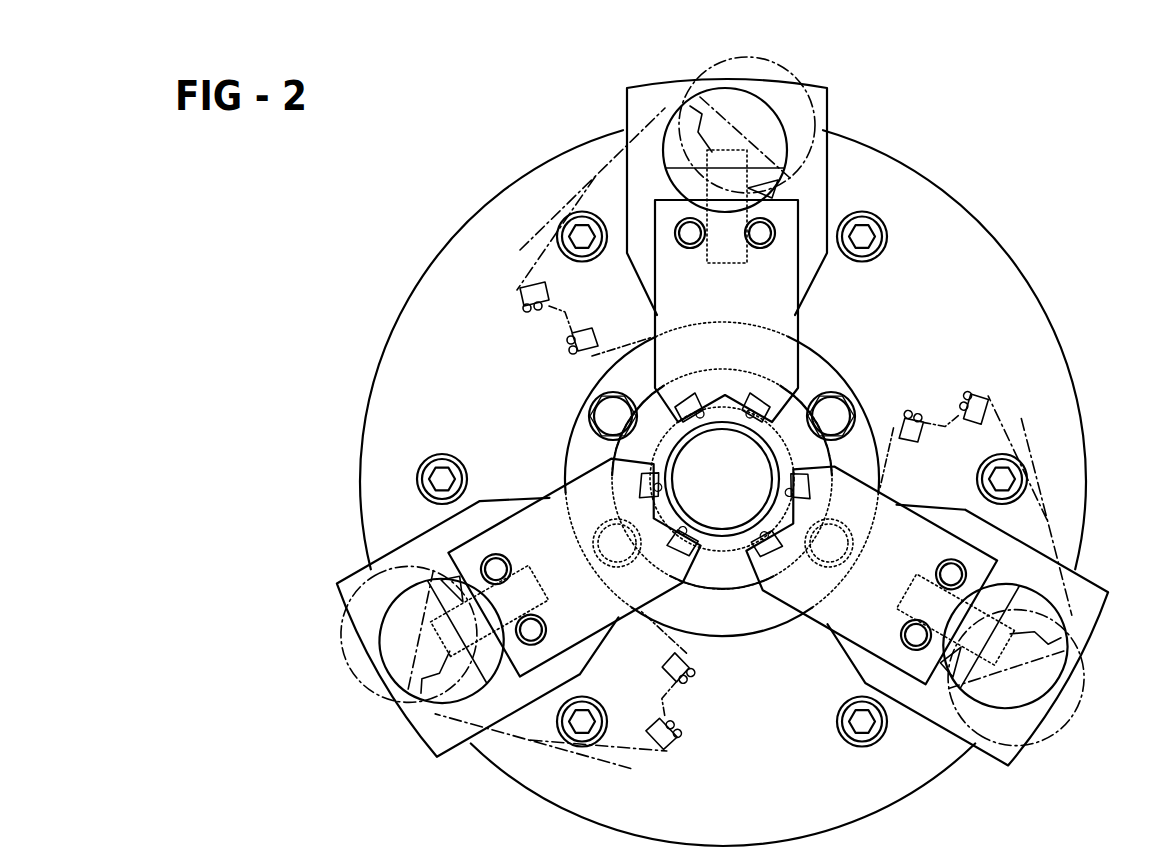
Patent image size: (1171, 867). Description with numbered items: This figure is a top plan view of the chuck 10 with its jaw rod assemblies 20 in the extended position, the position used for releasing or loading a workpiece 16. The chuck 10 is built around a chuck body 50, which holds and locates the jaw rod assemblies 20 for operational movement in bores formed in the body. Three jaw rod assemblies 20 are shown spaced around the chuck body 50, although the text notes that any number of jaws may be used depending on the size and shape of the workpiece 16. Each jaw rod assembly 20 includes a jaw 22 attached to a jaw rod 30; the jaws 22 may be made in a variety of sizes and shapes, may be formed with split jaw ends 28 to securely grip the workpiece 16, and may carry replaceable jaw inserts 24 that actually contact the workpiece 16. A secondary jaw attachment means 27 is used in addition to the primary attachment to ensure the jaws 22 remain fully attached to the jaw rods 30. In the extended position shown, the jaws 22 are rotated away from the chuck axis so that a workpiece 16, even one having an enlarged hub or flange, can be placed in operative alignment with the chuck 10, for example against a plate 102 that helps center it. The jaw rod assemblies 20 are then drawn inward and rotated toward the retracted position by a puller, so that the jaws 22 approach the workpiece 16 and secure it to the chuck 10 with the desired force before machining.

The chuck 10 is at (1022, 186).
The workpiece 16 is at (724, 540).
The jaw rod assembly 20 is at (549, 530).
The jaw 22 is at (772, 352).
The jaw insert 24 is at (673, 738).
The secondary jaw attachment means 27 is at (766, 234).
The split jaw end 28 is at (571, 344).
The jaw rod 30 is at (770, 130).
The chuck body 50 is at (1030, 318).
The plate 102 is at (782, 617).